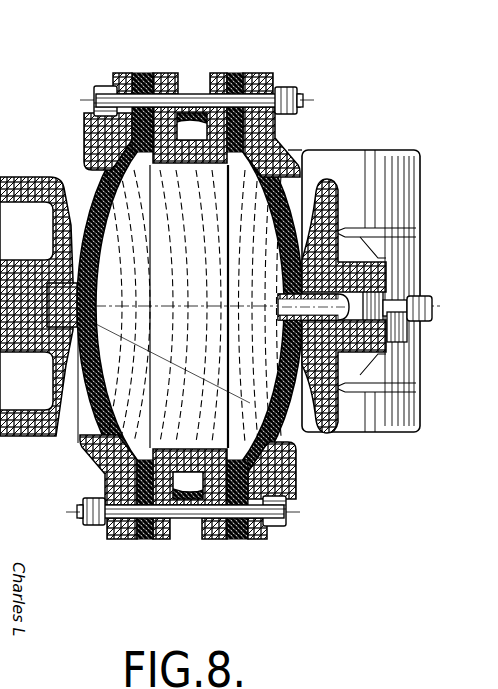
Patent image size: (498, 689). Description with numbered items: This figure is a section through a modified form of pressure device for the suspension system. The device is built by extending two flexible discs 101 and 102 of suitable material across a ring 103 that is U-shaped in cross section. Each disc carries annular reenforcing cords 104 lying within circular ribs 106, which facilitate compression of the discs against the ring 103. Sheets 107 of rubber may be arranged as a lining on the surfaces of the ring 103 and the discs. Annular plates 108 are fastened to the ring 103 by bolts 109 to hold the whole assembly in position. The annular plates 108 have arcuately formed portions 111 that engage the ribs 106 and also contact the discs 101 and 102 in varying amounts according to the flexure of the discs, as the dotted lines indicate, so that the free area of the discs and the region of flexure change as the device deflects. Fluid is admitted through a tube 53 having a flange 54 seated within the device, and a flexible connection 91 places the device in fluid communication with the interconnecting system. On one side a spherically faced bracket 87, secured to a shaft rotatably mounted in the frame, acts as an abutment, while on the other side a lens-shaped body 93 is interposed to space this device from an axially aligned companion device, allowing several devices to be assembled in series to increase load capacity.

The tube 53 is at (382, 350).
The flange 54 is at (300, 320).
The spherically faced bracket 87 is at (337, 410).
The flexible connection 91 is at (432, 307).
The lens-shaped body 93 is at (3, 182).
The flexible disc 101 is at (295, 200).
The flexible disc 102 is at (93, 197).
The ring 103 is at (180, 68).
The annular reenforcing cords 104 is at (110, 130).
The circular ribs 106 is at (273, 132).
The sheets of rubber 107 is at (174, 170).
The annular plates 108 is at (122, 74).
The bolts 109 is at (292, 98).
The arcuately formed portions 111 is at (106, 148).